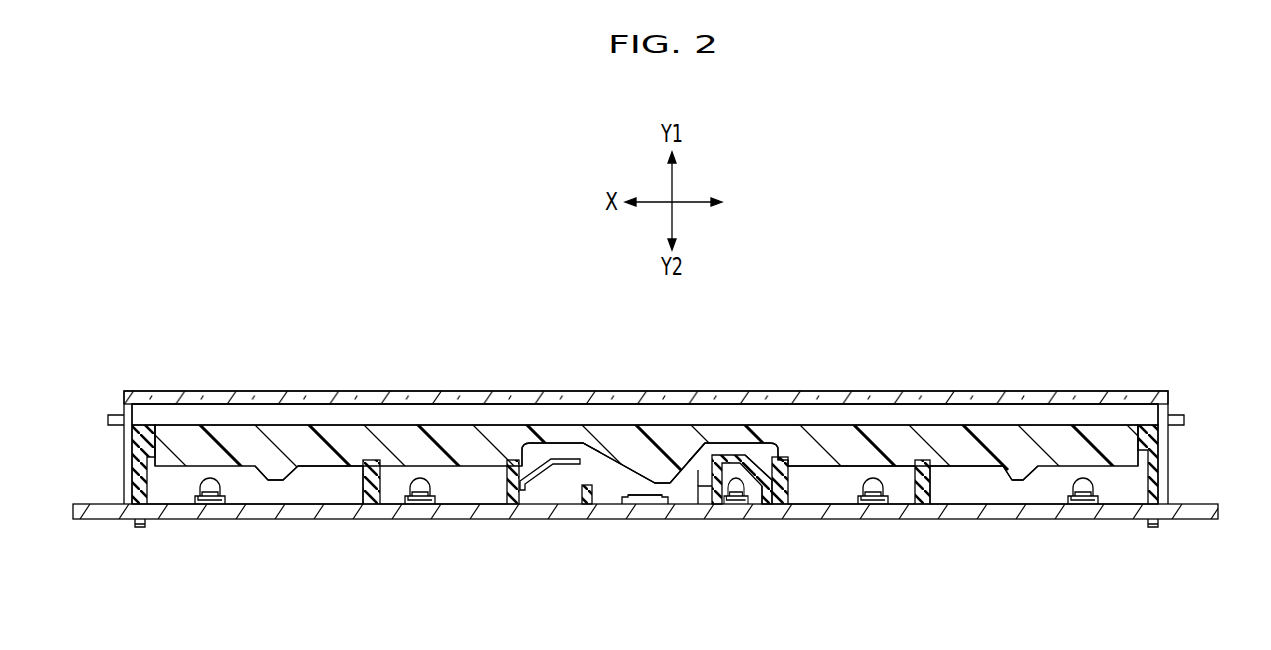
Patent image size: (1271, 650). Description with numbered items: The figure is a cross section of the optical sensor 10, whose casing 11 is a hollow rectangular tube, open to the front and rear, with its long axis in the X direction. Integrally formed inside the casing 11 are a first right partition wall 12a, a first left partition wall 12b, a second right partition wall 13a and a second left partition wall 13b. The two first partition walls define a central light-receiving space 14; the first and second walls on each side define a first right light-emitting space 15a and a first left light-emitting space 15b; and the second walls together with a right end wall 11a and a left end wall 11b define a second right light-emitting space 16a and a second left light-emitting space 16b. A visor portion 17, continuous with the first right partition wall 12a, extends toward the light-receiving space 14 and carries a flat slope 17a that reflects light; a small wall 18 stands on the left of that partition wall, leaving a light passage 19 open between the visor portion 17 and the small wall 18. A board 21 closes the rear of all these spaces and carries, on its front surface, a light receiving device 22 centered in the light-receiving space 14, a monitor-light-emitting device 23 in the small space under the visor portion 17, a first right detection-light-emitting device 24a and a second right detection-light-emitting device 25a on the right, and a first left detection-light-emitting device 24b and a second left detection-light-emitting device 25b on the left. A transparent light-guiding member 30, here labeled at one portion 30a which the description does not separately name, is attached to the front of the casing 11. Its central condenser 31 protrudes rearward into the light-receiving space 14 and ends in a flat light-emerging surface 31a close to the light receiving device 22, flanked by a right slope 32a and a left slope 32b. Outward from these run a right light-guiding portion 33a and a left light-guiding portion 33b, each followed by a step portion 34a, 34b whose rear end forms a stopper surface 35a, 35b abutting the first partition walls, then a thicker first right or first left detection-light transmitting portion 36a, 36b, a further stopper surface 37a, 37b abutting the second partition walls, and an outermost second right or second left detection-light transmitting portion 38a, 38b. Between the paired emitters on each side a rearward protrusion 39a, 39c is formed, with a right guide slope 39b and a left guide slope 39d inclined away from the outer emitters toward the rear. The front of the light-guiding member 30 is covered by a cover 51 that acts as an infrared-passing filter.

The optical sensor 10 is at (1056, 353).
The casing 11 is at (1163, 430).
The right end wall 11a is at (1160, 457).
The left end wall 11b is at (140, 490).
The first right partition wall 12a is at (784, 497).
The first left partition wall 12b is at (520, 488).
The second right partition wall 13a is at (932, 490).
The second left partition wall 13b is at (358, 496).
The light-receiving space 14 is at (693, 492).
The first right light-emitting space 15a is at (830, 490).
The first left light-emitting space 15b is at (465, 496).
The second right light-emitting space 16a is at (980, 494).
The second left light-emitting space 16b is at (303, 496).
The visor portion 17 is at (718, 452).
The slope 17a is at (760, 497).
The small wall 18 is at (703, 492).
The light passage 19 is at (692, 445).
The board 21 is at (572, 518).
The light receiving device 22 is at (648, 498).
The monitor-light-emitting device 23 is at (741, 498).
The first right detection-light-emitting device 24a is at (873, 506).
The first left detection-light-emitting device 24b is at (418, 506).
The second right detection-light-emitting device 25a is at (1080, 506).
The second left detection-light-emitting device 25b is at (208, 506).
The light-guiding member 30 is at (431, 420).
The light guide portion 30a is at (950, 432).
The condenser 31 is at (641, 452).
The light-emerging surface 31a is at (636, 498).
The right slope 32a is at (682, 472).
The left slope 32b is at (585, 440).
The right light-guiding portion 33a is at (745, 432).
The left light-guiding portion 33b is at (555, 432).
The step portion 34a is at (772, 440).
The step portion 34b is at (525, 440).
The stopper surface 35a is at (784, 484).
The stopper surface 35b is at (512, 490).
The first right detection-light transmitting portion 36a is at (876, 432).
The first left detection-light transmitting portion 36b is at (405, 435).
The stopper surface 37a is at (921, 490).
The stopper surface 37b is at (376, 490).
The second right detection-light transmitting portion 38a is at (1120, 432).
The second left detection-light transmitting portion 38b is at (266, 432).
The protrusion 39a is at (1014, 484).
The right guide slope 39b is at (1042, 488).
The protrusion 39c is at (282, 482).
The left guide slope 39d is at (258, 482).
The cover 51 is at (348, 415).